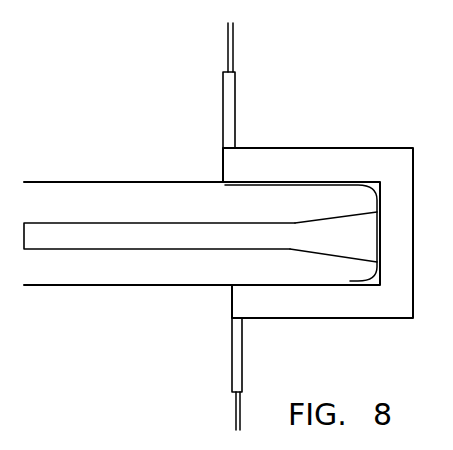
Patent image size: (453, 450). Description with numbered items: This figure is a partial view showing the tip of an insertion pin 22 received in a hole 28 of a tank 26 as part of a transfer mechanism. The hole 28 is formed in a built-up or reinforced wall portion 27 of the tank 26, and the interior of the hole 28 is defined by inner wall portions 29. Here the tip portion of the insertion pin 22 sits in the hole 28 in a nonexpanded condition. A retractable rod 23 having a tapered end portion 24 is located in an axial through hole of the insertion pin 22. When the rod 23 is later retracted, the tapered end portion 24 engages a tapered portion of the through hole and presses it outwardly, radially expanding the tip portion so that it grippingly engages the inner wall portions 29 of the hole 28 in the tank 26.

The insertion pin 22 is at (142, 203).
The retractable rod 23 is at (108, 234).
The tapered end portion 24 is at (335, 228).
The tank 26 is at (287, 66).
The reinforced wall portion 27 is at (232, 367).
The hole 28 is at (267, 182).
The inner wall portions 29 is at (317, 302).